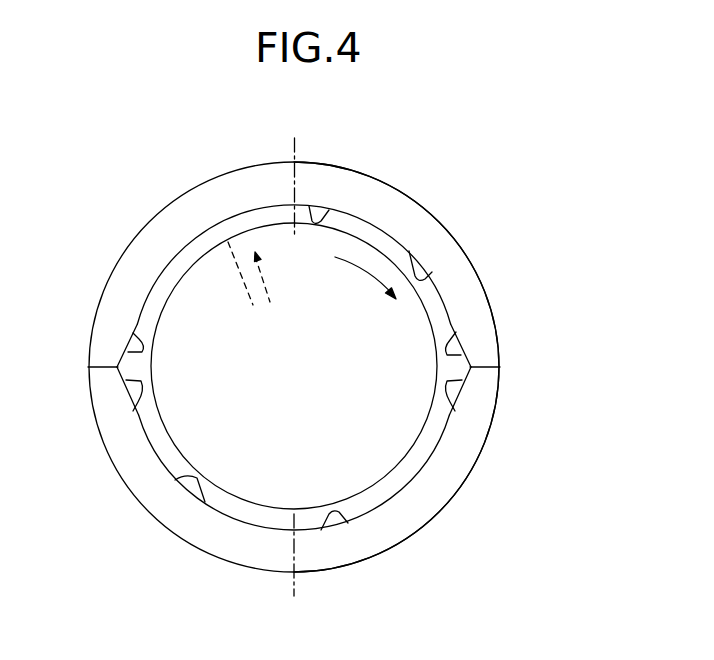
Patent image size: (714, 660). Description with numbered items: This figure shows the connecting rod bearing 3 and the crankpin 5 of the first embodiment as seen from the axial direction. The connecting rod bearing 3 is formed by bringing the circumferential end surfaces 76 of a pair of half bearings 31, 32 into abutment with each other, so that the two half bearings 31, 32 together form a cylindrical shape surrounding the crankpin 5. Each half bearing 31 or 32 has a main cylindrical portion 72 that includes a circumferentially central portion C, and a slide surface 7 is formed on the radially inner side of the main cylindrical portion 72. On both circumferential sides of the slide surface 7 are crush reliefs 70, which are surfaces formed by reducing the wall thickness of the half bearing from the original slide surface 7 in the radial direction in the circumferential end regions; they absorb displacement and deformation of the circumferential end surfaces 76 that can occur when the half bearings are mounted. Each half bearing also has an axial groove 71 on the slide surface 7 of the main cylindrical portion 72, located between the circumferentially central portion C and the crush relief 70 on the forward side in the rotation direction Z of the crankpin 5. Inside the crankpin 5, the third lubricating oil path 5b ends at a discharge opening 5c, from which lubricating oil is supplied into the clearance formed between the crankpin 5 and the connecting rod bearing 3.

The connecting rod bearing 3 is at (357, 170).
The half bearing 31 is at (400, 187).
The half bearing 32 is at (436, 516).
The crankpin 5 is at (190, 427).
The third lubricating oil path 5b is at (237, 268).
The discharge opening 5c is at (287, 292).
The slide surface 7 is at (310, 208).
The crush relief 70 is at (447, 354).
The axial groove 71 is at (428, 279).
The main cylindrical portion 72 is at (258, 192).
The circumferential end surface 76 is at (106, 365).
The circumferentially central portion C is at (293, 186).
The rotation direction Z is at (358, 272).